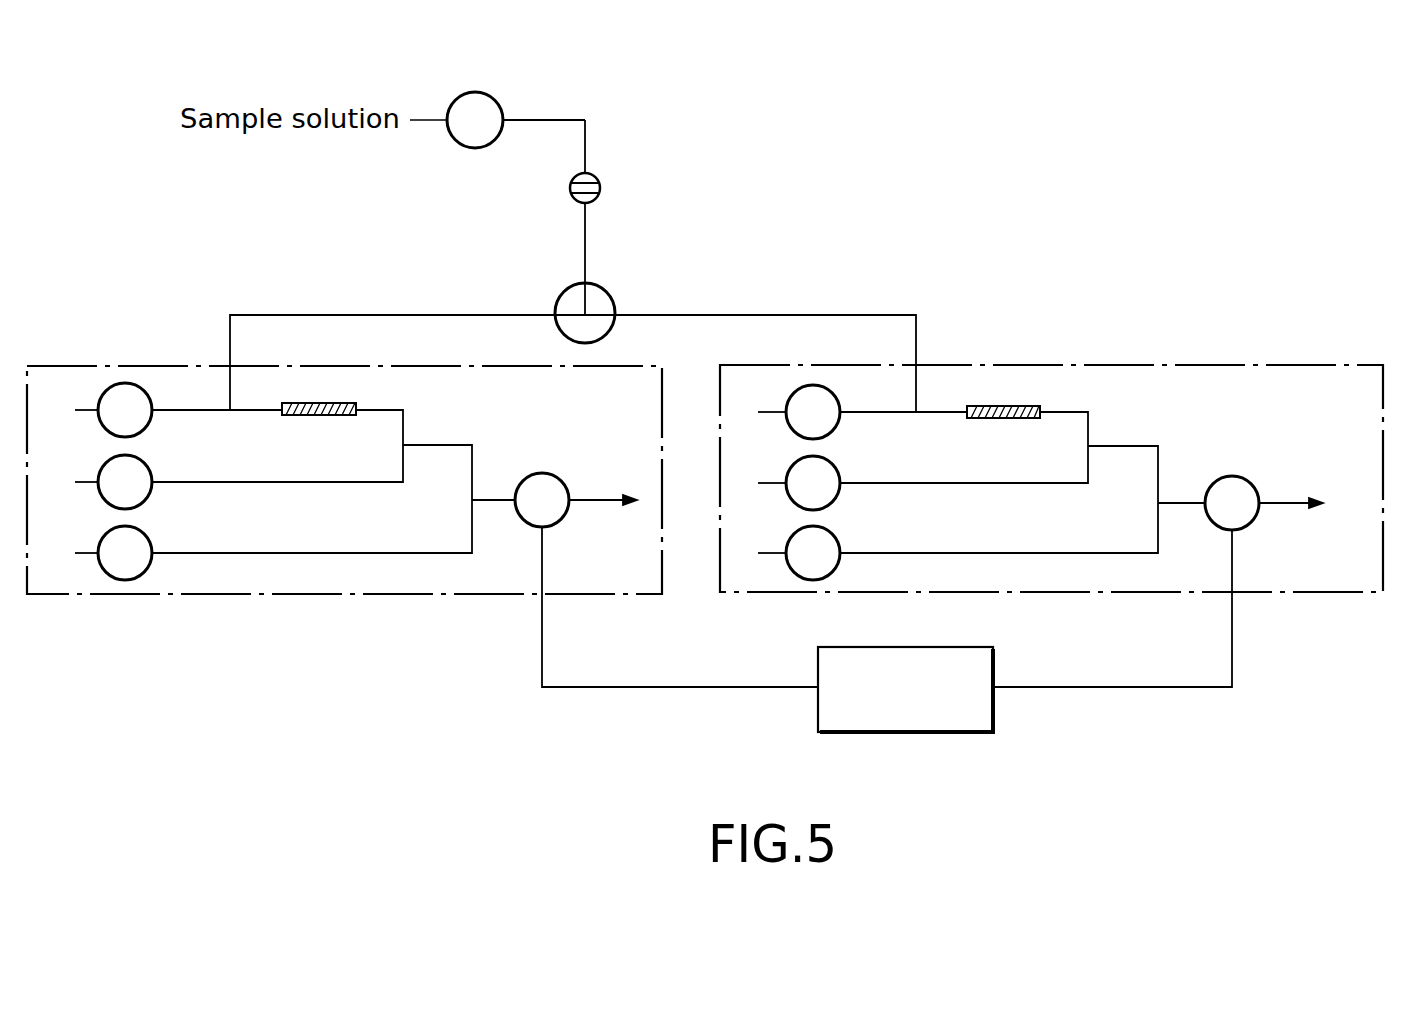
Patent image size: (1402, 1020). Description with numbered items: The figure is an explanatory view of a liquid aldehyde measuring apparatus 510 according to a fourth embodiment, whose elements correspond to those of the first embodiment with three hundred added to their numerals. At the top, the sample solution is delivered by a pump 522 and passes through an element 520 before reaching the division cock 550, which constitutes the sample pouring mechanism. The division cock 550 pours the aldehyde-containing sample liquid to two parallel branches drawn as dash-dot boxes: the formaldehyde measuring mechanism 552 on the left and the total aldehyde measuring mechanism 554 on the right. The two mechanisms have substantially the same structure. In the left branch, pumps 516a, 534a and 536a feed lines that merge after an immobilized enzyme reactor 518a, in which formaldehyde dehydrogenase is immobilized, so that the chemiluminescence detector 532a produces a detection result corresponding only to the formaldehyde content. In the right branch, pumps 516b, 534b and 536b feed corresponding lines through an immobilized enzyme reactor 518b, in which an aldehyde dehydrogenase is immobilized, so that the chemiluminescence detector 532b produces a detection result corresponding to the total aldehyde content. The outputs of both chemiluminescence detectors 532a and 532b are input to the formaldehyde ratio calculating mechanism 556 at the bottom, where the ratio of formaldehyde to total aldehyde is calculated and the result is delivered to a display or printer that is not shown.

The flow analysis system 510 is at (983, 224).
The sample solution pump P1 522 is at (500, 106).
The sample injection valve 520 is at (597, 180).
The division cock 550 is at (608, 290).
The formaldehyde measuring mechanism 552 is at (138, 594).
The total aldehyde measuring mechanism 554 is at (1098, 593).
The carrier pump Pa2 516a is at (146, 400).
The reagent pump Pa3 534a is at (146, 472).
The reagent pump Pa4 536a is at (146, 543).
The immobilized enzyme reactor 518a is at (335, 403).
The chemiluminescence detector 532a is at (560, 481).
The carrier pump Pb2 516b is at (834, 402).
The reagent pump Pb3 534b is at (834, 473).
The reagent pump Pb4 536b is at (834, 543).
The immobilized enzyme reactor 518b is at (1020, 406).
The chemiluminescence detector 532b is at (1250, 484).
The formaldehyde ratio calculating mechanism 556 is at (935, 734).